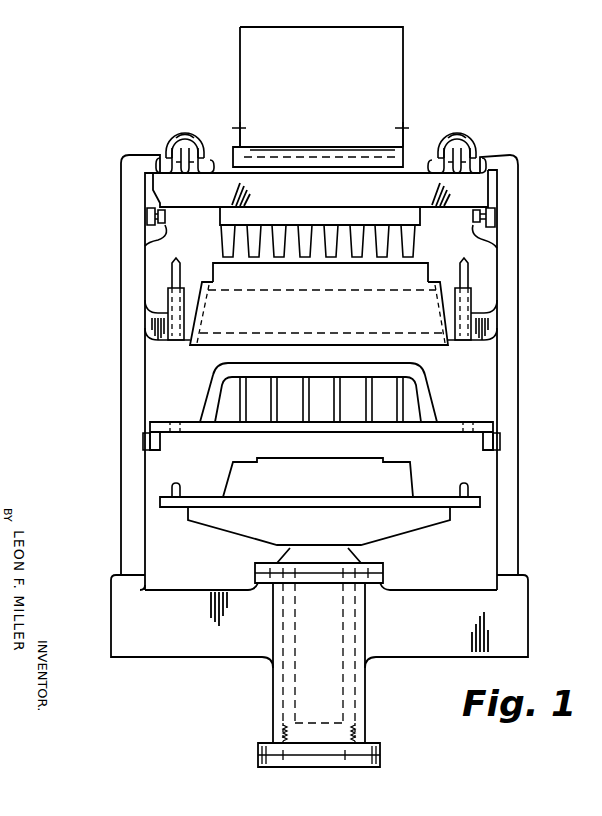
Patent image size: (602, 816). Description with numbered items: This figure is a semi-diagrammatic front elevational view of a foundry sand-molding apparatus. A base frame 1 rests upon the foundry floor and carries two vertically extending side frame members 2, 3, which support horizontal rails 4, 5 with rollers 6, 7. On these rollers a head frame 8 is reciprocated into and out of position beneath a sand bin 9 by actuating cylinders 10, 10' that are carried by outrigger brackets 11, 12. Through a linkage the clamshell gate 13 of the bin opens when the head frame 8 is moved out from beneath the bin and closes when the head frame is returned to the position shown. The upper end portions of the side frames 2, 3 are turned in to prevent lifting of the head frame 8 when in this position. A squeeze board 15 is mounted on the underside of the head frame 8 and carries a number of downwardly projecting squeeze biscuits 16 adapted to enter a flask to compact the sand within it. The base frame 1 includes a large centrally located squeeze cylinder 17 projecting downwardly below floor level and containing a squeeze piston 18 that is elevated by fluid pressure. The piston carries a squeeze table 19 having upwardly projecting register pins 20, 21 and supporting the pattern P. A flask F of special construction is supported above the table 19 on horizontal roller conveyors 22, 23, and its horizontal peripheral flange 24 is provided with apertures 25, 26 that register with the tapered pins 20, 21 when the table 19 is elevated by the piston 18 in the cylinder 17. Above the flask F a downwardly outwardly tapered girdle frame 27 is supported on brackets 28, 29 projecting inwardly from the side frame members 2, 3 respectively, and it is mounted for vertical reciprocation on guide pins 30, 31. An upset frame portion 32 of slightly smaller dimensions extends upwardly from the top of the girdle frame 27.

The base frame 1 is at (518, 624).
The side frame member 2 is at (121, 533).
The side frame member 3 is at (518, 531).
The horizontal rail 4 is at (147, 215).
The horizontal rail 5 is at (487, 222).
The roller 6 is at (160, 232).
The roller 7 is at (478, 232).
The head frame 8 is at (472, 185).
The sand bin 9 is at (320, 97).
The actuating cylinder 10 is at (163, 137).
The actuating cylinder 10' is at (470, 134).
The outrigger bracket 11 is at (183, 138).
The outrigger bracket 12 is at (452, 138).
The clamshell gate 13 is at (290, 150).
The squeeze board 15 is at (320, 216).
The squeeze biscuits 16 is at (220, 242).
The squeeze cylinder 17 is at (273, 697).
The squeeze piston 18 is at (343, 692).
The squeeze table 19 is at (482, 502).
The register pin 20 is at (172, 488).
The register pin 21 is at (470, 486).
The horizontal roller conveyor 22 is at (143, 442).
The horizontal roller conveyor 23 is at (500, 438).
The horizontal peripheral flange 24 is at (487, 423).
The aperture 25 is at (465, 422).
The aperture 26 is at (175, 422).
The girdle frame 27 is at (319, 313).
The bracket 28 is at (168, 335).
The bracket 29 is at (486, 322).
The guide pin 30 is at (172, 280).
The guide pin 31 is at (470, 272).
The upset frame portion 32 is at (320, 272).
The flask F is at (202, 390).
The pattern P is at (318, 477).